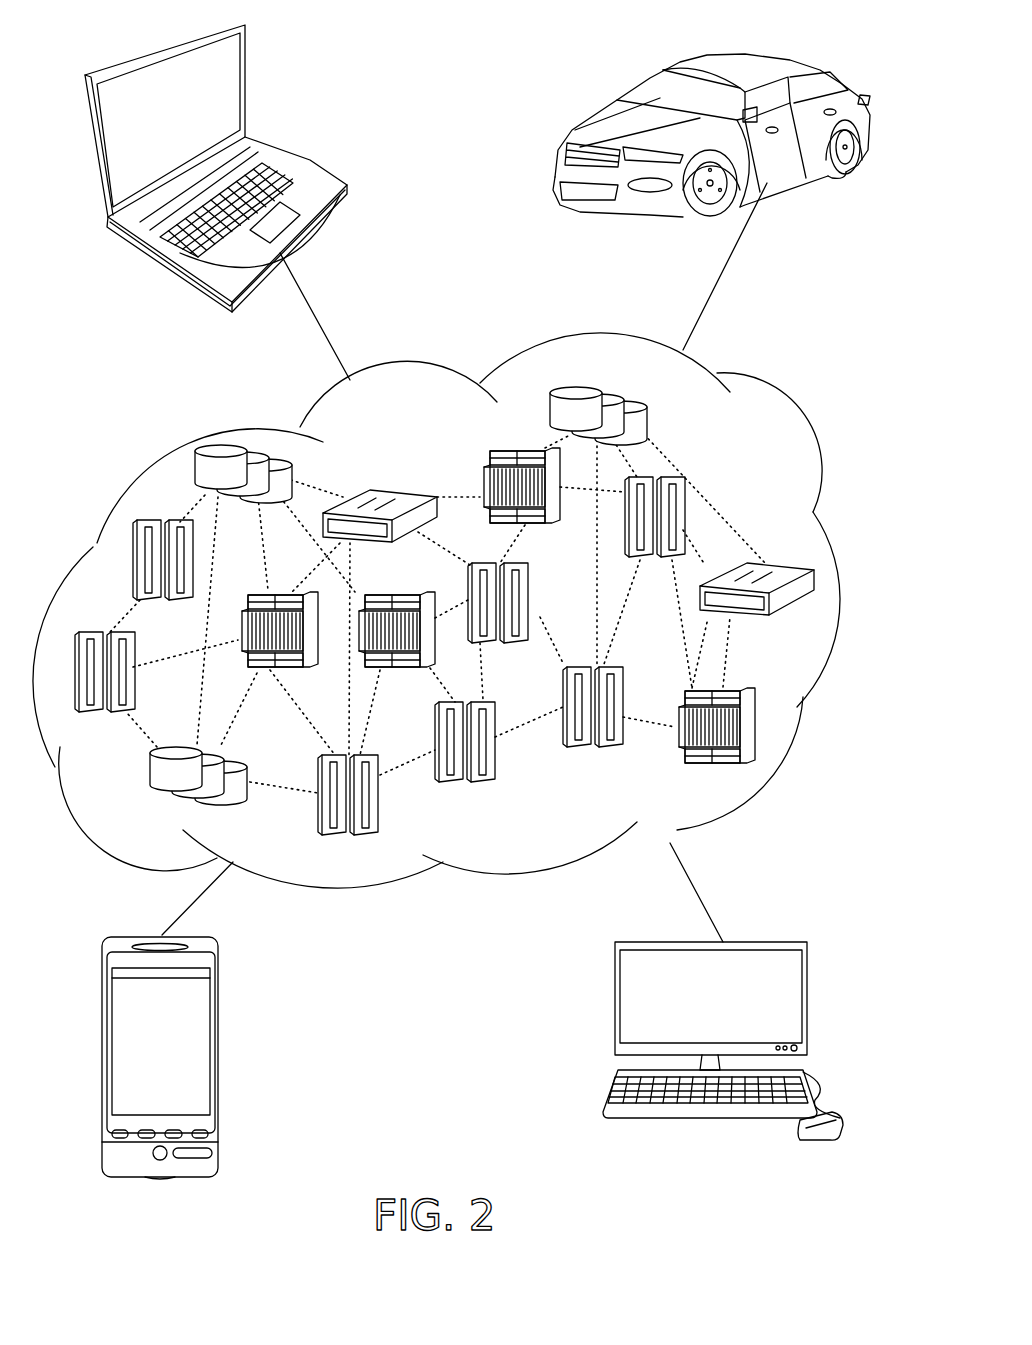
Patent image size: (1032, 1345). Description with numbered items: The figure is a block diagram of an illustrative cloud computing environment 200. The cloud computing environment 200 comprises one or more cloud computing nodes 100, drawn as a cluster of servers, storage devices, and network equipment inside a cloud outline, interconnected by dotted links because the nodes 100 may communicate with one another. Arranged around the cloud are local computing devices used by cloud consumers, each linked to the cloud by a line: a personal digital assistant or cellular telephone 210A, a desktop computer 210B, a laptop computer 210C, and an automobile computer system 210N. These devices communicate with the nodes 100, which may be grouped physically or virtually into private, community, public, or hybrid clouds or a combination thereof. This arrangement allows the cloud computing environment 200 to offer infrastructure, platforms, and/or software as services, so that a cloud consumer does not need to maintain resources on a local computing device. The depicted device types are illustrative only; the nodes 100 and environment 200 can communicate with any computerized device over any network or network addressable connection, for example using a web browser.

The cloud computing node 100 is at (780, 559).
The cloud computing environment 200 is at (443, 610).
The personal digital assistant or cellular telephone 210A is at (218, 962).
The desktop computer 210B is at (807, 960).
The laptop computer 210C is at (307, 160).
The automobile computer system 210N is at (823, 72).